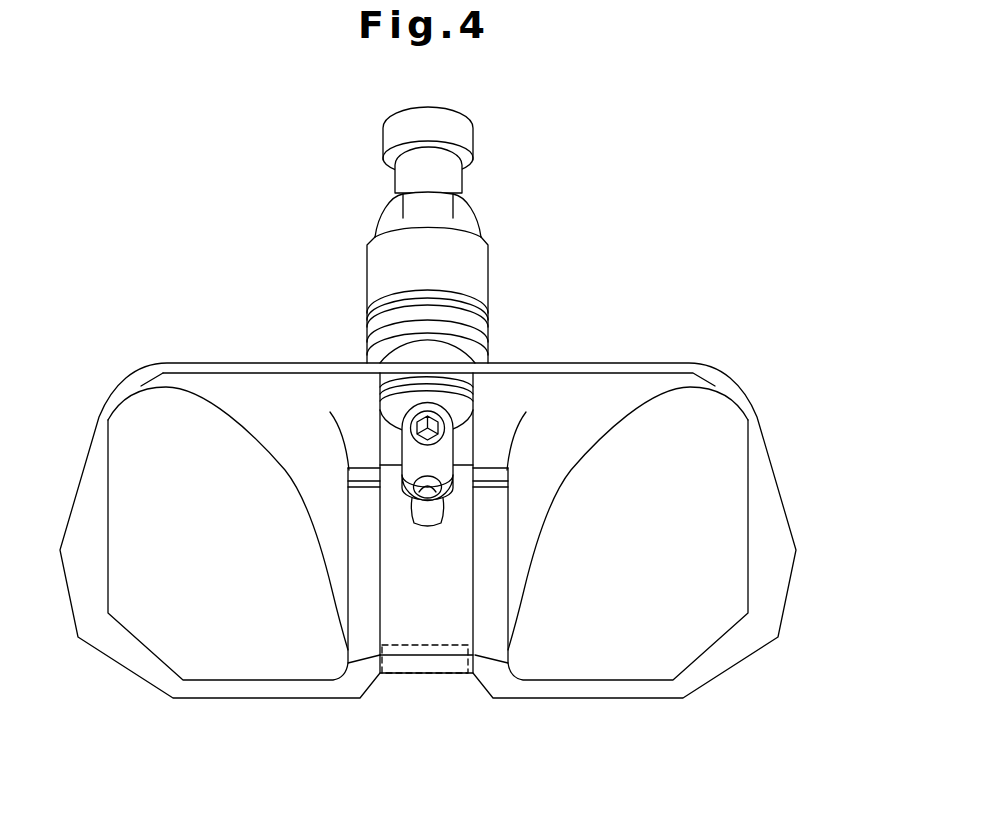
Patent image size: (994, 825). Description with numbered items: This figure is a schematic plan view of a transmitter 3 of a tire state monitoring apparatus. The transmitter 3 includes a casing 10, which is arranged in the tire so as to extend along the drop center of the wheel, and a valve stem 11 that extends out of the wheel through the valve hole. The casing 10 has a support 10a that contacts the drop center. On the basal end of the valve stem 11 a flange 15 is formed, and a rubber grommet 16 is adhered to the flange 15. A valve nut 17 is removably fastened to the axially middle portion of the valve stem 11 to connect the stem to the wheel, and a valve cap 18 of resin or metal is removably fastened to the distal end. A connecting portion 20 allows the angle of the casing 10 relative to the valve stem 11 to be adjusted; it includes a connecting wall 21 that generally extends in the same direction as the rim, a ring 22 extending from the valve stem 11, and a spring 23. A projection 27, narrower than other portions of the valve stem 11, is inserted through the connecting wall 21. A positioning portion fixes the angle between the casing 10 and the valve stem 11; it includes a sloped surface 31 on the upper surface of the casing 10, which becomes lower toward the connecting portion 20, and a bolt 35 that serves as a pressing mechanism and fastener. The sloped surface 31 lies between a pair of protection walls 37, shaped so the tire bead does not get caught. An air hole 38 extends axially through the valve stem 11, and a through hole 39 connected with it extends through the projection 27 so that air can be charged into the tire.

The transmitter 3 is at (625, 283).
The casing 10 is at (777, 473).
The support 10a is at (424, 660).
The valve stem 11 is at (464, 186).
The flange 15 is at (488, 352).
The grommet 16 is at (473, 302).
The valve nut 17 is at (480, 229).
The valve cap 18 is at (470, 137).
The connecting portion 20 is at (313, 318).
The connecting wall 21 is at (372, 357).
The ring 22 is at (392, 410).
The spring 23 is at (463, 378).
The projection 27 is at (463, 478).
The sloped surface 31 is at (392, 505).
The bolt 35 is at (415, 502).
The protection wall 37 is at (350, 470).
The air hole 38 is at (430, 501).
The through hole 39 is at (400, 420).